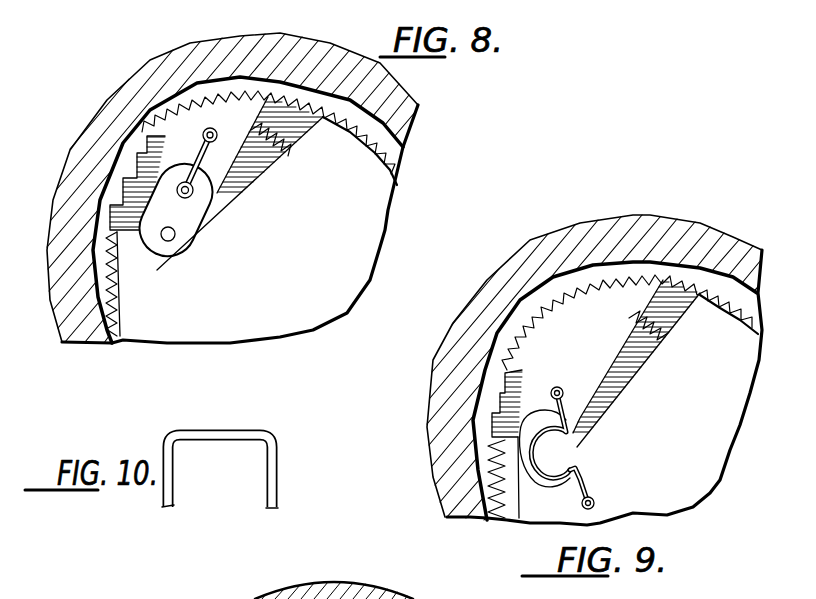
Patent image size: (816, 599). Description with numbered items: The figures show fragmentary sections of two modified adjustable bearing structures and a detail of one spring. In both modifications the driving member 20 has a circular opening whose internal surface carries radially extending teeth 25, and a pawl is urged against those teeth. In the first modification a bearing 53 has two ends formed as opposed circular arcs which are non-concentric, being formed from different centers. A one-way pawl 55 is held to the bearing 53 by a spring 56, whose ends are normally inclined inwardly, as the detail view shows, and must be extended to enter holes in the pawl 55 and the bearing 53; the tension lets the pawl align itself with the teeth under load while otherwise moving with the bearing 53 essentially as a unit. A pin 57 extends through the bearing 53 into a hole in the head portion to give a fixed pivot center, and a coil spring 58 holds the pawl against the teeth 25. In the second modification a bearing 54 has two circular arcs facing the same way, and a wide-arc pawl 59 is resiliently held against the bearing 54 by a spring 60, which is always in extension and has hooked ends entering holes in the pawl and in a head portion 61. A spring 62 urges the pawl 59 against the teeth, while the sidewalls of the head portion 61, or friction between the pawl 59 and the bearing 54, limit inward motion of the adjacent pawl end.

In FIG. 8, the driving member 20 is at (422, 104).
In FIG. 9, the driving member 20 is at (596, 232).
In FIG. 8, the teeth 25 is at (388, 160).
In FIG. 9, the teeth 25 is at (492, 387).
In FIG. 8, the bearing 53 is at (187, 227).
In FIG. 9, the bearing 54 is at (566, 450).
In FIG. 8, the one-way pawl 55 is at (230, 134).
In FIG. 8, the spring 56 is at (199, 153).
In FIG. 10, the spring 56 is at (265, 477).
In FIG. 8, the pin 57 is at (167, 240).
In FIG. 8, the coil spring 58 is at (291, 150).
In FIG. 9, the wide-arc pawl 59 is at (554, 350).
In FIG. 9, the spring 60 is at (581, 480).
In FIG. 9, the head portion 61 is at (651, 430).
In FIG. 9, the spring 62 is at (661, 338).